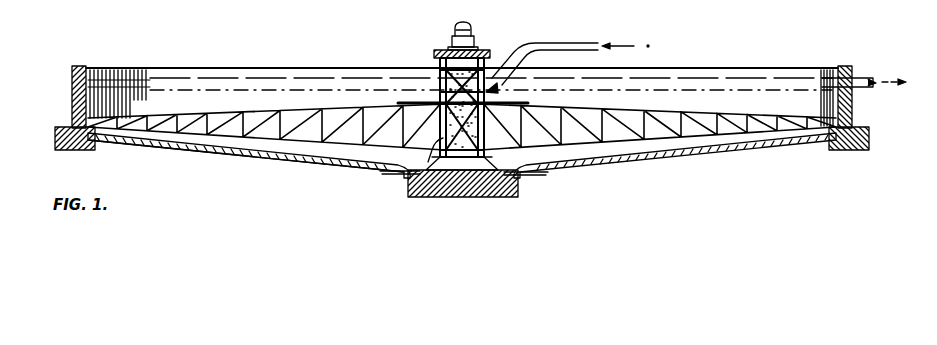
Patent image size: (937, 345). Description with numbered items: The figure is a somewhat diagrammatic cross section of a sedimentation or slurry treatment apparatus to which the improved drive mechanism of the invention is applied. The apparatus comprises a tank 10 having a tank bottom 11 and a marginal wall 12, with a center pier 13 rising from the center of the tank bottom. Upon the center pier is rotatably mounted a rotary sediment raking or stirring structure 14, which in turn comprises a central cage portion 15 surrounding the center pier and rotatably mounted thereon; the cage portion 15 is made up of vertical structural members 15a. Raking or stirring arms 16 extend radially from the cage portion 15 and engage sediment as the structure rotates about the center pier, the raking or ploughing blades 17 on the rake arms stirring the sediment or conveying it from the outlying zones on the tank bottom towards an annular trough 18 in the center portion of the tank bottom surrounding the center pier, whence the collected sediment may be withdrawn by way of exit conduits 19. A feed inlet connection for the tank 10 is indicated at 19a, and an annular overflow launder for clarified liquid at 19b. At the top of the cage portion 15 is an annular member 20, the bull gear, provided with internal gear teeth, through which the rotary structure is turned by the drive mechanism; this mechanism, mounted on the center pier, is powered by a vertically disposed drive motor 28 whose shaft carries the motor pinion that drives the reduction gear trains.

The tank 10 is at (330, 62).
The tank bottom 11 is at (230, 146).
The marginal wall 12 is at (72, 82).
The center pier 13 is at (433, 142).
The rotary sediment raking or stirring structure 14 is at (595, 108).
The central cage portion 15 is at (492, 101).
The vertical structural members 15a is at (502, 84).
The raking or stirring arms 16 is at (253, 113).
The raking or ploughing blades 17 is at (330, 153).
The annular trough 18 is at (435, 160).
The exit conduits 19 is at (832, 72).
The feed inlet connection 19a is at (555, 42).
The annular overflow launder 19b is at (92, 68).
The annular member 20 is at (473, 50).
The drive motor 28 is at (467, 27).